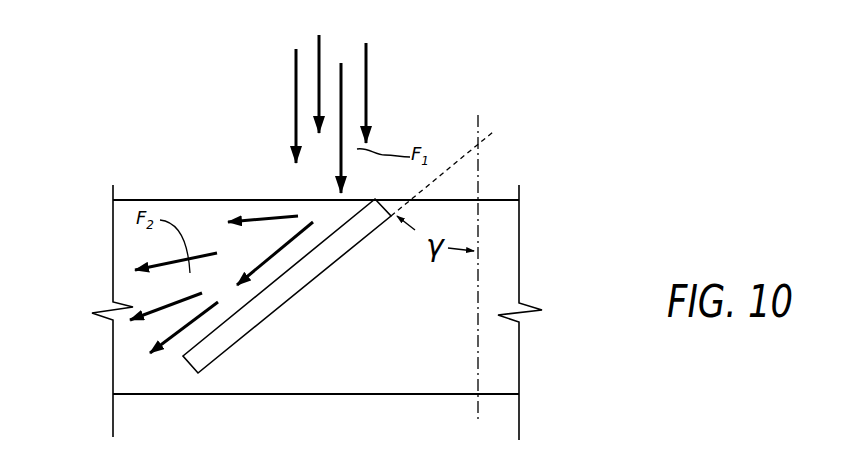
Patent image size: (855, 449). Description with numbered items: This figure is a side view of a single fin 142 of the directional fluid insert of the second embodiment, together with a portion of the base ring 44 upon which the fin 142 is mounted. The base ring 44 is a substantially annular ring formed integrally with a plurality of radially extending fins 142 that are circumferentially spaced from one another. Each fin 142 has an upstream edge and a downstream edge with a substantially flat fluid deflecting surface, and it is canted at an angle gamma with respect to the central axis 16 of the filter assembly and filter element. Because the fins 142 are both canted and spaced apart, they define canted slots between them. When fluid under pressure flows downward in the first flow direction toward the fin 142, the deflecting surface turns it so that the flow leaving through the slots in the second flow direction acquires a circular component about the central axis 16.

The central axis 16 is at (480, 158).
The radially extending fin 142 is at (313, 270).
The base ring 44 is at (128, 357).